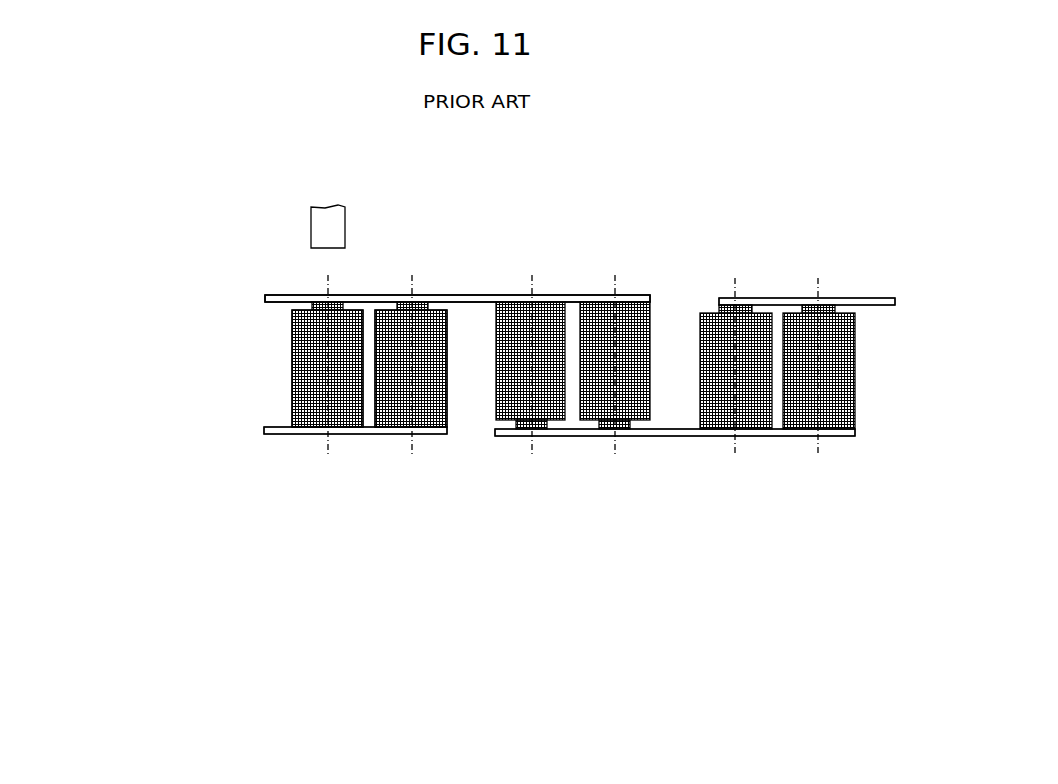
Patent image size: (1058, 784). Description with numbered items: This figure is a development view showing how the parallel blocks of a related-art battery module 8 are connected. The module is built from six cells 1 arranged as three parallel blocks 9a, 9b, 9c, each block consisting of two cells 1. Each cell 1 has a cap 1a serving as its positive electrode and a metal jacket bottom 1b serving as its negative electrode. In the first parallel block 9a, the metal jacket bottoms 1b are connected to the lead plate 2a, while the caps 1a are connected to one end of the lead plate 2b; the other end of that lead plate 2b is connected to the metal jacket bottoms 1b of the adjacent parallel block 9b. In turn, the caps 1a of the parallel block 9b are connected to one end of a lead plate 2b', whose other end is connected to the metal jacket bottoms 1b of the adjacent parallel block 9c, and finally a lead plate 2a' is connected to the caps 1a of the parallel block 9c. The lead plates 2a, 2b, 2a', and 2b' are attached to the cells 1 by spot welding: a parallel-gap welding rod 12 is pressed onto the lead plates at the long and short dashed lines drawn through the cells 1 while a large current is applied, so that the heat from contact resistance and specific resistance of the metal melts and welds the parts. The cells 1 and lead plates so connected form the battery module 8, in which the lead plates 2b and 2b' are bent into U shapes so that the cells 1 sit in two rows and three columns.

The cell 1 is at (443, 400).
The cap 1a is at (292, 303).
The metal jacket bottom 1b is at (292, 422).
The lead plate 2a is at (338, 461).
The lead plate 2a' is at (809, 274).
The lead plate 2b is at (457, 272).
The lead plate 2b' is at (675, 498).
The battery module 8 is at (852, 587).
The parallel block 9a is at (290, 477).
The parallel block 9b is at (493, 477).
The parallel block 9c is at (698, 477).
The parallel-gap welding rod 12 is at (334, 232).